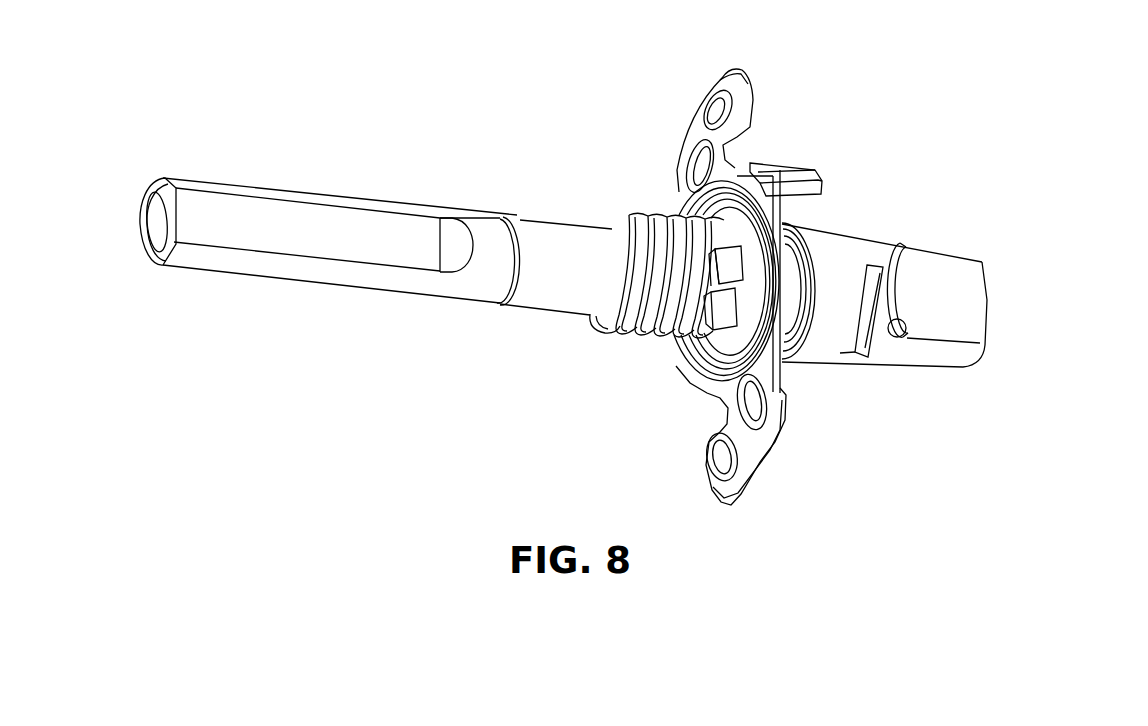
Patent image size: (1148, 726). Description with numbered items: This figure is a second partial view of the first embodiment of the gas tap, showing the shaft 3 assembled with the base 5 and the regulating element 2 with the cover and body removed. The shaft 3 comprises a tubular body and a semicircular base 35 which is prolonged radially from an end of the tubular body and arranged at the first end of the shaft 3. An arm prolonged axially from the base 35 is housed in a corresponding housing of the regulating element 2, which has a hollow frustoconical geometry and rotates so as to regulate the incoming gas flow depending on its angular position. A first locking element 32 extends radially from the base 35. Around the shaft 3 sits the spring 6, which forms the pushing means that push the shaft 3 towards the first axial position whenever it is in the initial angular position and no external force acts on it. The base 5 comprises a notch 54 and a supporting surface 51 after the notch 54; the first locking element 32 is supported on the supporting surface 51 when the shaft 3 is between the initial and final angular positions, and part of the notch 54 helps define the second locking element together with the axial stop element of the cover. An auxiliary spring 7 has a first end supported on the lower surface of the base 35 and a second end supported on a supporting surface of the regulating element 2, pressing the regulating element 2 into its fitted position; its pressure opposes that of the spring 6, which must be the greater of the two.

The regulating element 2 is at (943, 277).
The shaft 3 is at (495, 240).
The base 5 is at (747, 93).
The spring 6 is at (623, 210).
The auxiliary spring 7 is at (807, 243).
The first locking element 32 is at (675, 210).
The base 35 is at (690, 340).
The supporting surface 51 is at (700, 328).
The notch 54 is at (735, 328).